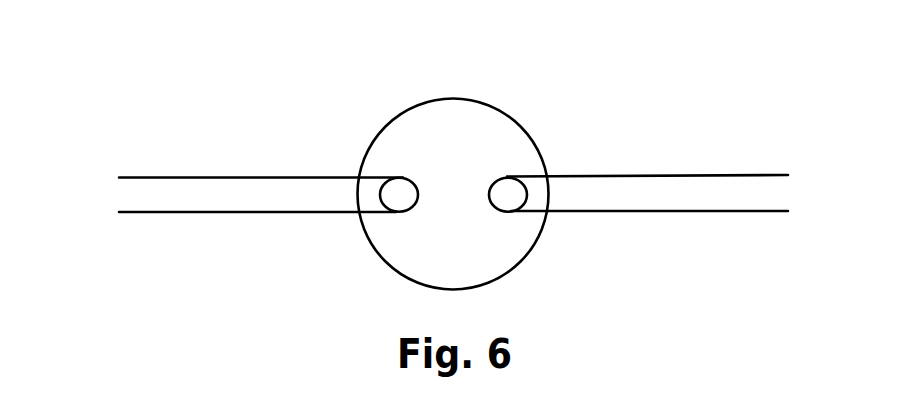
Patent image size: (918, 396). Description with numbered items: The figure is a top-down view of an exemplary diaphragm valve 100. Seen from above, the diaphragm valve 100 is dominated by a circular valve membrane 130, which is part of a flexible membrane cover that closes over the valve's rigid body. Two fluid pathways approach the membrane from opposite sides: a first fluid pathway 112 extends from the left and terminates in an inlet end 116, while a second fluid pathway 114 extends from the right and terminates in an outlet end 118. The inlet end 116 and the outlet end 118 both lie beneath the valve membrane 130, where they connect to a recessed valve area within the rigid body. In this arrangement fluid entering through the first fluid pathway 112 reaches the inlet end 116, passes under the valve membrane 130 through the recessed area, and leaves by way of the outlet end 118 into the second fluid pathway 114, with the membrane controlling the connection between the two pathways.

The diaphragm valve 100 is at (705, 62).
The first fluid pathway 112 is at (203, 177).
The second fluid pathway 114 is at (657, 174).
The inlet end 116 is at (403, 193).
The outlet end 118 is at (502, 193).
The valve membrane 130 is at (453, 120).